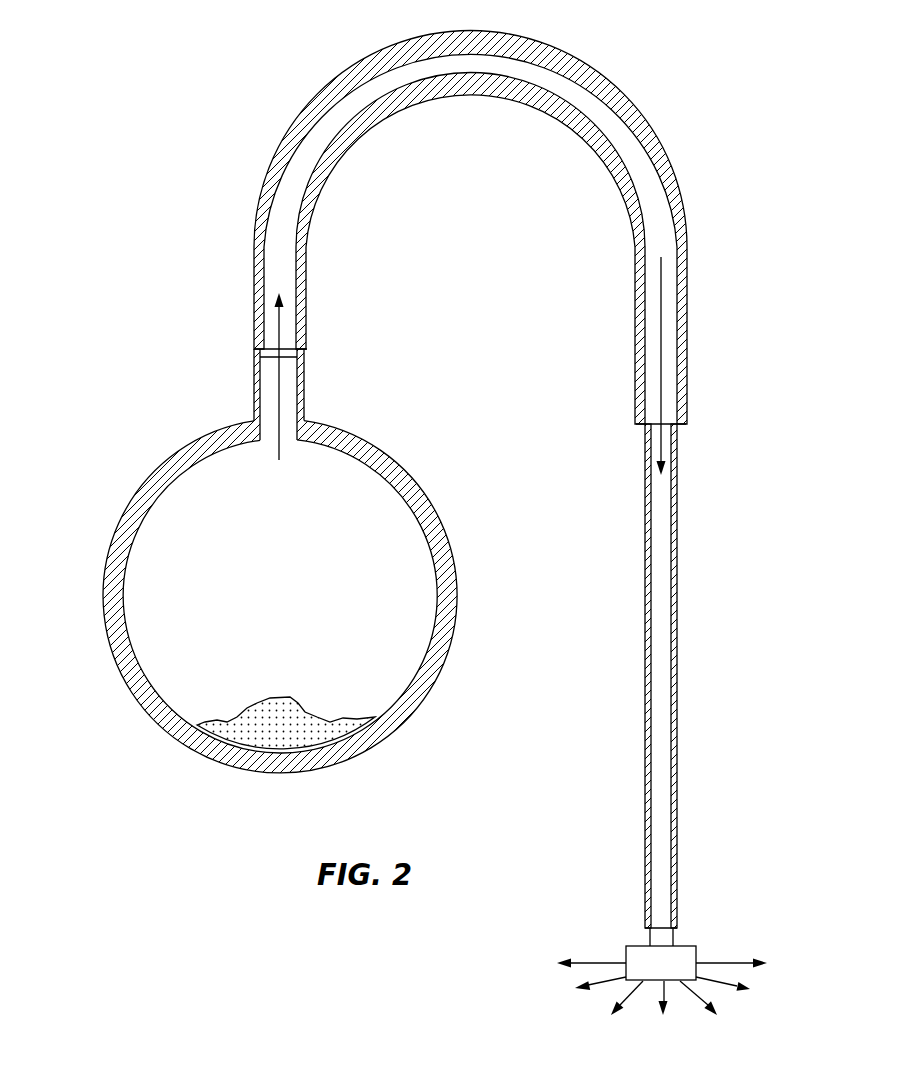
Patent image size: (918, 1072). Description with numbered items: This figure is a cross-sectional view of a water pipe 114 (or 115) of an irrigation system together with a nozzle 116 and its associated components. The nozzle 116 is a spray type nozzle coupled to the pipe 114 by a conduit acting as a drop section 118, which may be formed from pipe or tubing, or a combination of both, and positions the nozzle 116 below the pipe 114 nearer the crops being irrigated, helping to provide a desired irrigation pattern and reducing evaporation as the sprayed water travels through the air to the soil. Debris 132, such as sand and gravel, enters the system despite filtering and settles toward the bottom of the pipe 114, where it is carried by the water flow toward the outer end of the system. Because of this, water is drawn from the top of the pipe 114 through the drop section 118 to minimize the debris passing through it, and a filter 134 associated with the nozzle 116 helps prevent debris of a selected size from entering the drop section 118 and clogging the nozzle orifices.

The water pipe 114 is at (307, 561).
The water pipe 115 is at (400, 463).
The nozzle 116 is at (638, 945).
The drop section 118 is at (717, 277).
The debris 132 is at (237, 700).
The filter 134 is at (285, 348).